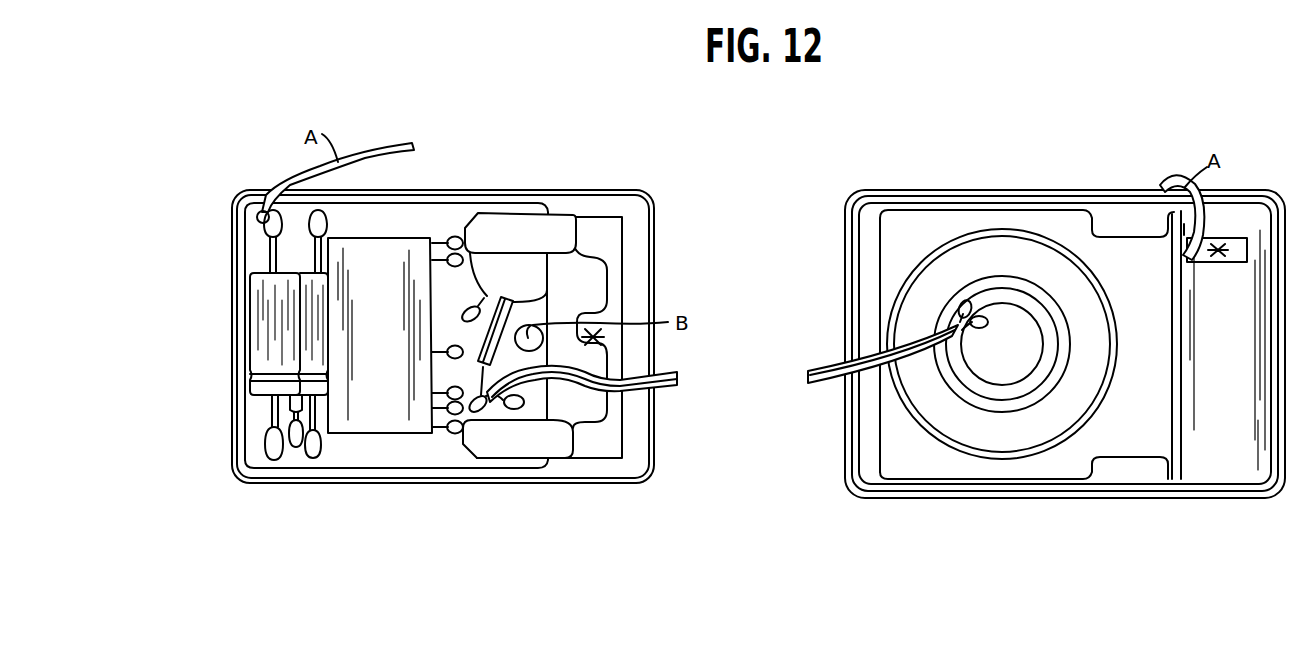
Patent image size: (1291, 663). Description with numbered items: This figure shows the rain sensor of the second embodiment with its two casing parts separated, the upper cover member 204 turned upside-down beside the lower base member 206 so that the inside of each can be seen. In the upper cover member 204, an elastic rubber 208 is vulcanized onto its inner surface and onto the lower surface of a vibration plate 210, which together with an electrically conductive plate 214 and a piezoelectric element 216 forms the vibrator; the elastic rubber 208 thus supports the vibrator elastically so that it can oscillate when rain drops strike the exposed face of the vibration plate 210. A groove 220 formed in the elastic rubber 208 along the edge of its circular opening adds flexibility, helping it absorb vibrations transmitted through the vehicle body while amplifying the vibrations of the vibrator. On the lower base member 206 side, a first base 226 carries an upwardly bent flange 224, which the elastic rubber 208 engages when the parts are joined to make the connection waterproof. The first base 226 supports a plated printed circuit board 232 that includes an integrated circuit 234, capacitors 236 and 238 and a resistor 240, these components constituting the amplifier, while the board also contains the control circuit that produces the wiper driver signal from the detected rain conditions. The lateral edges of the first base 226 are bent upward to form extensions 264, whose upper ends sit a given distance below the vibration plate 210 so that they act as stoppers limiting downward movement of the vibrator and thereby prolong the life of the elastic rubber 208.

The upper cover member 204 is at (1082, 193).
The lower base member 206 is at (578, 214).
The elastic rubber 208 is at (937, 277).
The vibration plate 210 is at (1003, 282).
The electrically conductive plate 214 is at (1040, 324).
The piezoelectric element 216 is at (1022, 370).
The groove 220 is at (960, 240).
The upwardly bent flange 224 is at (653, 283).
The first base 226 is at (630, 207).
The plated printed circuit board 232 is at (393, 453).
The integrated circuit 234 is at (410, 240).
The capacitor 236 is at (303, 350).
The capacitor 238 is at (258, 310).
The resistor 240 is at (290, 402).
The upward extension 264 is at (523, 440).